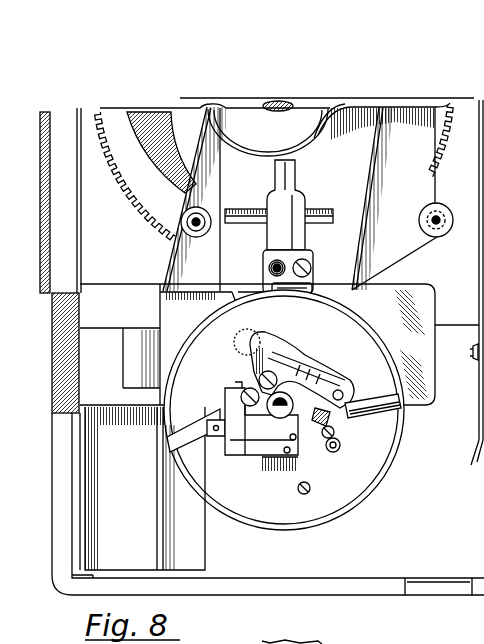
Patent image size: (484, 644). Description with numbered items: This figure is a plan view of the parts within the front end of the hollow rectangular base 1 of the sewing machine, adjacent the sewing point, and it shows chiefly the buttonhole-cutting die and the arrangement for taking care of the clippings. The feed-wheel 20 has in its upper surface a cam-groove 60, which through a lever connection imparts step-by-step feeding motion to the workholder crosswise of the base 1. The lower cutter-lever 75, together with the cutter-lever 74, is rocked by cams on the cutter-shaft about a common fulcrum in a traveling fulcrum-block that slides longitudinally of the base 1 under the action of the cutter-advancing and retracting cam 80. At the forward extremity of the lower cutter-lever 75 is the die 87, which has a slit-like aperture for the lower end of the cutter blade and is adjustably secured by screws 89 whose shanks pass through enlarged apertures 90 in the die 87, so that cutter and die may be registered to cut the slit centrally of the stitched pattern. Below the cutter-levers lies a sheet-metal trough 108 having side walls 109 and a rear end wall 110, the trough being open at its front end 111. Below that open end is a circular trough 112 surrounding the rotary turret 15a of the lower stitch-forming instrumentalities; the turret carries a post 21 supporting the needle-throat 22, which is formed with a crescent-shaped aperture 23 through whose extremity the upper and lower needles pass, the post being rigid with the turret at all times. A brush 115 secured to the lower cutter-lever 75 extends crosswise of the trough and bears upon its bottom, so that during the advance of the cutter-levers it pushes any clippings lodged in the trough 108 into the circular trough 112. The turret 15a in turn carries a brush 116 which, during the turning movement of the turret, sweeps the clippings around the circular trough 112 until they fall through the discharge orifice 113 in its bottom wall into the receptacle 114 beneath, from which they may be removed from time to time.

The hollow rectangular base 1 is at (54, 358).
The feed-wheel 20 is at (150, 186).
The cam-groove 60 is at (170, 150).
The sheet-metal trough 108 is at (357, 182).
The side walls 109 is at (220, 181).
The rear end wall 110 is at (275, 146).
The brush 115 is at (318, 213).
The lower cutter-lever 75 is at (300, 236).
The die 87 is at (267, 278).
The screws 89 is at (270, 262).
The enlarged apertures 90 is at (277, 260).
The cutter-advancing and retracting cam 80 is at (300, 294).
The front end 111 is at (257, 284).
The circular trough 112 is at (357, 488).
The discharge orifice 113 is at (190, 415).
The receptacle 114 is at (200, 549).
The needle-throat 22 is at (297, 383).
The crescent-shaped aperture 23 is at (262, 397).
The post 21 is at (352, 415).
The brush 116 is at (386, 418).
The rotary turret 15a is at (326, 458).
The cutter-lever 74 is at (318, 642).